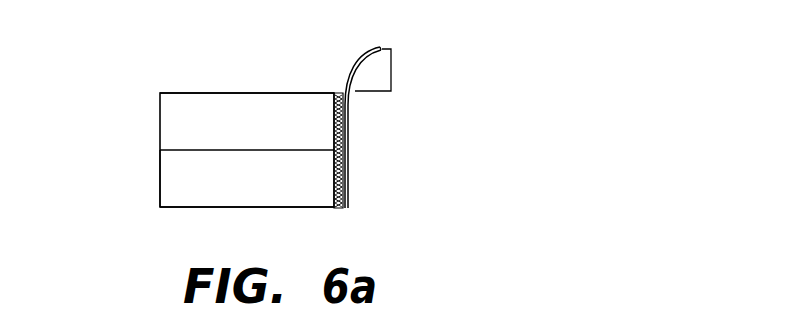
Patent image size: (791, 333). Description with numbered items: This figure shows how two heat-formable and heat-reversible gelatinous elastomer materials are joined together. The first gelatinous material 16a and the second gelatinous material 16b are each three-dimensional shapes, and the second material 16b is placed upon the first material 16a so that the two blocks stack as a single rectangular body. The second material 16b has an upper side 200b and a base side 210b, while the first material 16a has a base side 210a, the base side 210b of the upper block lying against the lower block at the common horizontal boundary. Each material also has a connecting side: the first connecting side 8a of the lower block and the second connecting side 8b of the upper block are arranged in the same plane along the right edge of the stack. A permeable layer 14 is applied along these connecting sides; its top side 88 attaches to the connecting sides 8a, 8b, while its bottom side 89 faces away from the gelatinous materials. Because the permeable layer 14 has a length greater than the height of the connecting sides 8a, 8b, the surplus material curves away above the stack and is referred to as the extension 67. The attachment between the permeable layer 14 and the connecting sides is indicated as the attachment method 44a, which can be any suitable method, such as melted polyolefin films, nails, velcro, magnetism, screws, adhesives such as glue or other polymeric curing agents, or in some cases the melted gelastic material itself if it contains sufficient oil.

The upper side 200b is at (192, 92).
The second gelatinous elastomer material 16b is at (158, 113).
The base side 210b is at (175, 150).
The first gelatinous elastomer material 16a is at (158, 185).
The base side 210a is at (175, 207).
The second connecting side 8b is at (334, 101).
The first connecting side 8a is at (334, 182).
The top side 88 is at (348, 88).
The permeable layer 14 is at (378, 47).
The extension 67 is at (391, 70).
The bottom side 89 is at (348, 186).
The attachment method 44a is at (341, 208).